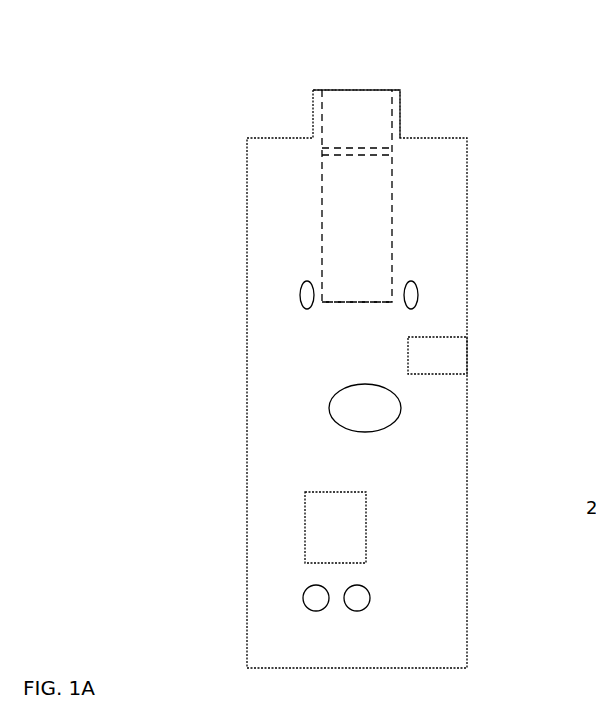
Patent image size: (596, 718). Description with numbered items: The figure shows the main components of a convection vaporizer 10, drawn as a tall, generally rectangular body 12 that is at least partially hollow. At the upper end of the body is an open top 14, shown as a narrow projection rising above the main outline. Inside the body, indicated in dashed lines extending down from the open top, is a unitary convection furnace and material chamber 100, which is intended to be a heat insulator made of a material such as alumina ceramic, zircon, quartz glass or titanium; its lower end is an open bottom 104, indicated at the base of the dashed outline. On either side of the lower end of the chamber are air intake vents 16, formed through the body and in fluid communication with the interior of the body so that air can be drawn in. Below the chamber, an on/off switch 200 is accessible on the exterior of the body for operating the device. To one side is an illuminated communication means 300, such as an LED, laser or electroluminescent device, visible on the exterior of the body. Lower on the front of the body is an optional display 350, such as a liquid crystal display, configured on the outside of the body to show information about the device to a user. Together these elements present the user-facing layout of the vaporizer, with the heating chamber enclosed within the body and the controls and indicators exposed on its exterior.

The vaporizer 10 is at (182, 269).
The body 12 is at (246, 358).
The open top 14 is at (328, 70).
The air intake vents 16 is at (418, 290).
The unitary convection furnace and material chamber 100 is at (414, 202).
The open bottom 104 is at (346, 312).
The on/off switch 200 is at (365, 408).
The illuminated communication means 300 is at (437, 355).
The display 350 is at (335, 527).